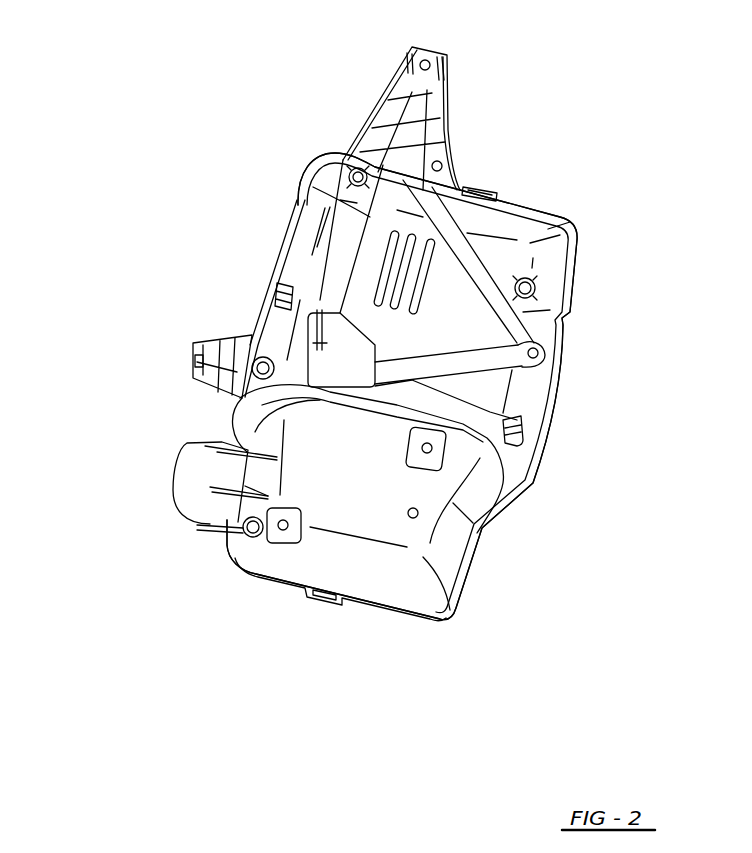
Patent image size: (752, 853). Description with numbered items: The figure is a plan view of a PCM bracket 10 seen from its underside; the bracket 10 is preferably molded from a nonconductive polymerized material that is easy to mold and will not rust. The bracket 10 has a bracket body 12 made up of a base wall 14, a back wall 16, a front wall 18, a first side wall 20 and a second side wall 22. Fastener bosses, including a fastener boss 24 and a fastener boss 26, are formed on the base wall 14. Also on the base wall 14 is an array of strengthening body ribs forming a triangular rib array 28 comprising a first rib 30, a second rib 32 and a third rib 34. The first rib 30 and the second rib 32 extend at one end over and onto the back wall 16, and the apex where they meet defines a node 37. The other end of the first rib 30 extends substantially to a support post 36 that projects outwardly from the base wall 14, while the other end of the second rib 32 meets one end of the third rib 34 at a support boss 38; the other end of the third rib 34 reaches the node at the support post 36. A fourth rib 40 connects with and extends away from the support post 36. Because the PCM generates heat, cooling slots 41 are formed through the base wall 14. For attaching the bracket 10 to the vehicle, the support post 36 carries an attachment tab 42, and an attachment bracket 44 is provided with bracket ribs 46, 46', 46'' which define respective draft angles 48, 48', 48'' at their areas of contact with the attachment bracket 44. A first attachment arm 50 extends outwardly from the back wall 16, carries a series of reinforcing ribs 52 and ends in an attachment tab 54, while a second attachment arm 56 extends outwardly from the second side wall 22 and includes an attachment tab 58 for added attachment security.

The bracket 10 is at (222, 103).
The bracket body 12 is at (300, 202).
The base wall 14 is at (552, 227).
The back wall 16 is at (547, 212).
The front wall 18 is at (392, 597).
The first side wall 20 is at (470, 570).
The second side wall 22 is at (293, 230).
The fastener boss 24 is at (273, 540).
The fastener boss 26 is at (470, 483).
The triangular rib array 28 is at (493, 213).
The first rib 30 is at (303, 177).
The second rib 32 is at (500, 303).
The third rib 34 is at (483, 361).
The support post 36 is at (320, 300).
The node 37 is at (380, 172).
The support boss 38 is at (543, 353).
The fourth rib 40 is at (517, 418).
The cooling slots 41 is at (430, 242).
The attachment tab 42 is at (307, 318).
The attachment bracket 44 is at (198, 445).
The bracket rib 46 is at (201, 560).
The bracket rib 46' is at (198, 482).
The bracket rib 46'' is at (194, 408).
The draft angle 48 is at (170, 525).
The draft angle 48' is at (169, 469).
The draft angle 48'' is at (152, 428).
The first attachment arm 50 is at (360, 137).
The reinforcing ribs 52 is at (413, 120).
The attachment tab 54 is at (430, 58).
The second attachment arm 56 is at (207, 343).
The attachment tab 58 is at (192, 358).